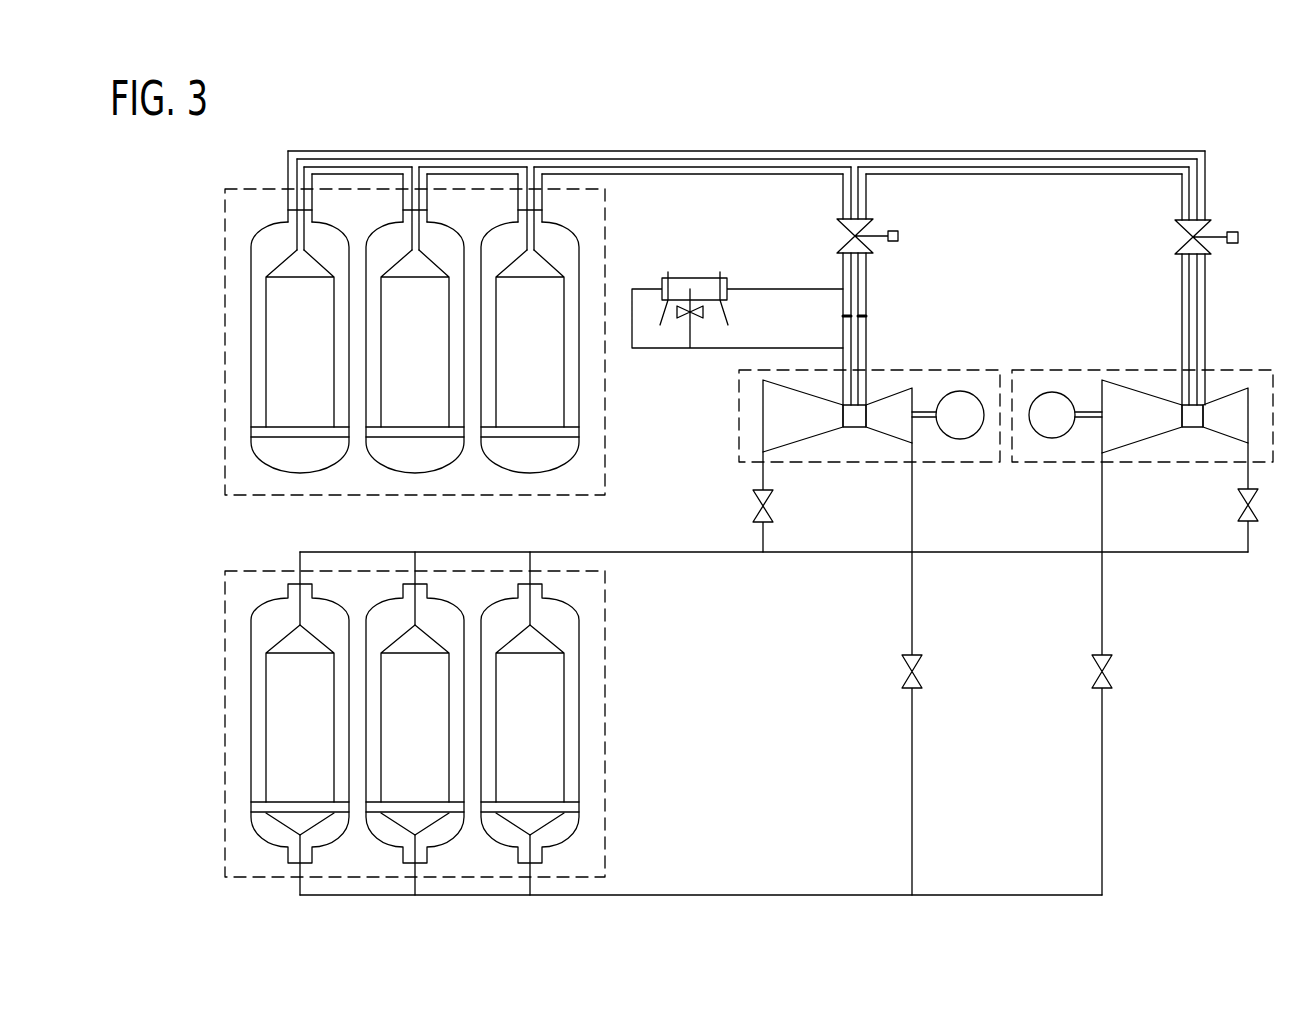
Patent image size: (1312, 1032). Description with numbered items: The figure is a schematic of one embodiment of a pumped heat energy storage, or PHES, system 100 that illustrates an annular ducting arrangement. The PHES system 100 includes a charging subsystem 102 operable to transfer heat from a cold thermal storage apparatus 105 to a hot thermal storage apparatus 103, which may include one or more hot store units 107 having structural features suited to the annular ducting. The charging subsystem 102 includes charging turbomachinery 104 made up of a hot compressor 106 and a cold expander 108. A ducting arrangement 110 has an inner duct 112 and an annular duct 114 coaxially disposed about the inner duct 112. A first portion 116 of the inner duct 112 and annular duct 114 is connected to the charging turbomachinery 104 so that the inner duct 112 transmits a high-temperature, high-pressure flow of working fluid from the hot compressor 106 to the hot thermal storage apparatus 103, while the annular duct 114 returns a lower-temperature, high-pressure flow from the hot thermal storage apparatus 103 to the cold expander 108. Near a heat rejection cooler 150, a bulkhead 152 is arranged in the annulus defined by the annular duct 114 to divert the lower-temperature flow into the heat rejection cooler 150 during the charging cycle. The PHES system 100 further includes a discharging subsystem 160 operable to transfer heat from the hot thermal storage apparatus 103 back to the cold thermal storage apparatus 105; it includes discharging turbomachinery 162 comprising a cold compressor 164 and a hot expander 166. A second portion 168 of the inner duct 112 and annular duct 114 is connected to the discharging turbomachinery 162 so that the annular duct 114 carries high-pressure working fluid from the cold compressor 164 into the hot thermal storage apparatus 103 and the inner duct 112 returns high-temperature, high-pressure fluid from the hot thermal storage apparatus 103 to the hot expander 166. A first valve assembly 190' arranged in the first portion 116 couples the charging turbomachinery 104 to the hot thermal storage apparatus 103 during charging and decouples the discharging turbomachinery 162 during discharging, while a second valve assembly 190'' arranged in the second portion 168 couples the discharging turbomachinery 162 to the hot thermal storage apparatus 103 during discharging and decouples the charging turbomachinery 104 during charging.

The PHES system 100 is at (1186, 84).
The charging subsystem 102 is at (832, 467).
The hot thermal storage apparatus 103 is at (225, 342).
The charging turbomachinery 104 is at (858, 448).
The cold thermal storage apparatus 105 is at (225, 728).
The hot compressor 106 is at (777, 421).
The hot store unit 107 is at (234, 419).
The cold expander 108 is at (902, 402).
The ducting arrangement 110 is at (795, 166).
The inner duct 112 is at (625, 150).
The annular duct 114 is at (706, 158).
The first portion of inner duct and annular duct 116 is at (861, 199).
The heat rejection cooler 150 is at (692, 255).
The bulkhead 152 is at (862, 314).
The discharging subsystem 160 is at (1151, 467).
The discharging turbomachinery 162 is at (1192, 449).
The cold compressor 164 is at (1242, 402).
The hot expander 166 is at (1115, 402).
The second portion of inner duct and annular duct 168 is at (1205, 190).
The first valve assembly 190' is at (827, 237).
The second valve assembly 190'' is at (1165, 237).